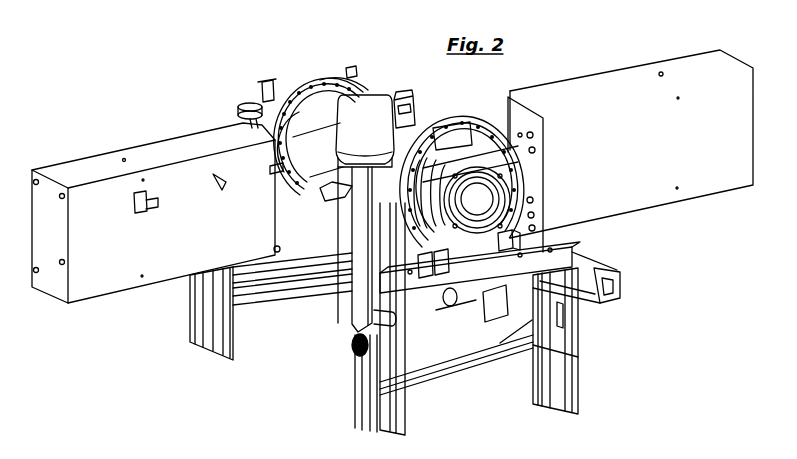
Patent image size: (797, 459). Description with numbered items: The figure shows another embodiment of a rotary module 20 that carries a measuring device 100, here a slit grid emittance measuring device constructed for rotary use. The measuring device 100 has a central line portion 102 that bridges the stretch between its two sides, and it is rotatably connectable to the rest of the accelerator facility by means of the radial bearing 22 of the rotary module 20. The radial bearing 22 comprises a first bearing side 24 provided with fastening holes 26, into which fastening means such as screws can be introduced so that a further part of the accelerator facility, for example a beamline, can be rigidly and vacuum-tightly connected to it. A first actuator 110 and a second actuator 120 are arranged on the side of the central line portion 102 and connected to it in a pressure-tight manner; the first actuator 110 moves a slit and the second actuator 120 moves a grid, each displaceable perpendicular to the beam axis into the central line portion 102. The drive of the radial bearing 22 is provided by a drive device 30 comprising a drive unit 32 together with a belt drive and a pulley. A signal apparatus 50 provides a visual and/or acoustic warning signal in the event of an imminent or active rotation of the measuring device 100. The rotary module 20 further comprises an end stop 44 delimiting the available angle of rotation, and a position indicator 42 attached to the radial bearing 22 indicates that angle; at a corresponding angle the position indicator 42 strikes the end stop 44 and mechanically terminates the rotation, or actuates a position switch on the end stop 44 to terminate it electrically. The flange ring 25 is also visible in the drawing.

The second actuator 120 is at (158, 160).
The first actuator 110 is at (646, 200).
The flange ring 25 is at (288, 82).
The signal apparatus 50 is at (370, 96).
The end stop 44 is at (404, 206).
The measuring device 100 is at (410, 118).
The central line portion 102 is at (336, 186).
The radial bearing 22 is at (478, 126).
The position indicator 42 is at (455, 130).
The rotary module 20 is at (490, 198).
The first bearing side 24 is at (505, 236).
The fastening holes 26 is at (447, 232).
The drive device 30 is at (507, 317).
The drive unit 32 is at (495, 318).